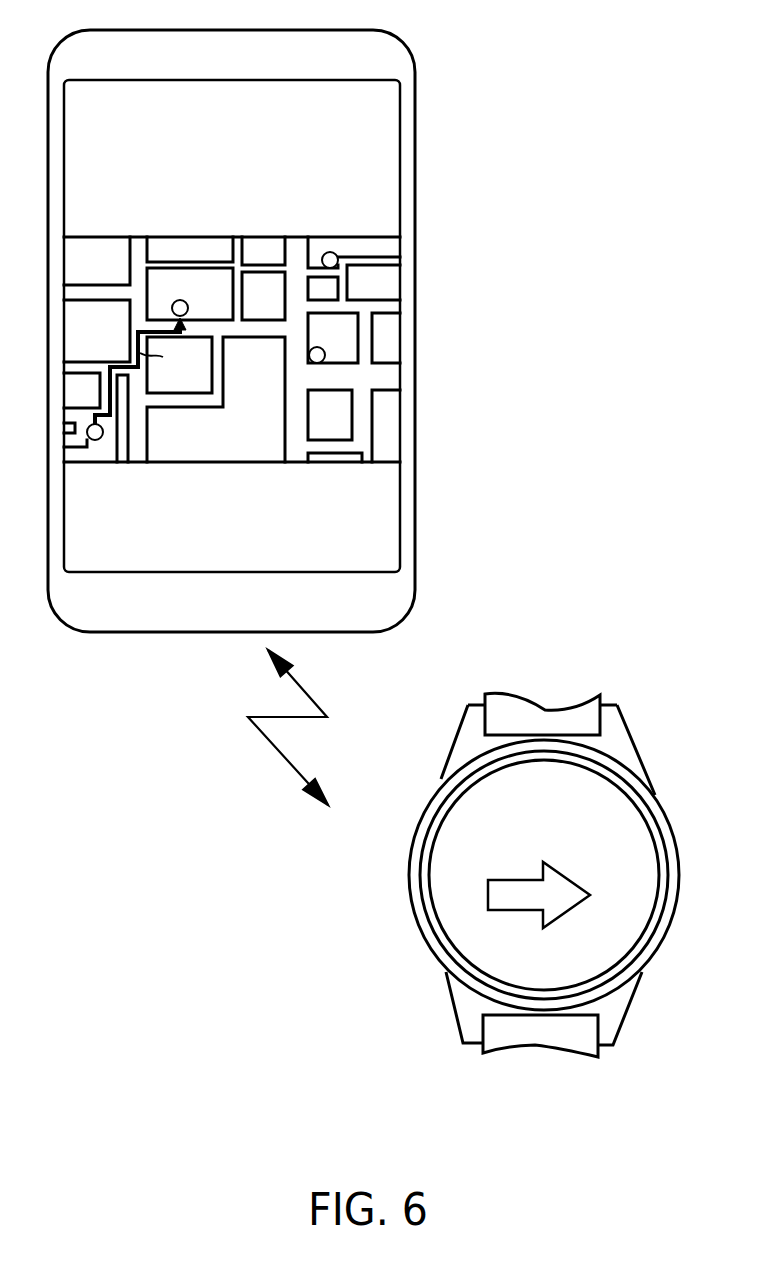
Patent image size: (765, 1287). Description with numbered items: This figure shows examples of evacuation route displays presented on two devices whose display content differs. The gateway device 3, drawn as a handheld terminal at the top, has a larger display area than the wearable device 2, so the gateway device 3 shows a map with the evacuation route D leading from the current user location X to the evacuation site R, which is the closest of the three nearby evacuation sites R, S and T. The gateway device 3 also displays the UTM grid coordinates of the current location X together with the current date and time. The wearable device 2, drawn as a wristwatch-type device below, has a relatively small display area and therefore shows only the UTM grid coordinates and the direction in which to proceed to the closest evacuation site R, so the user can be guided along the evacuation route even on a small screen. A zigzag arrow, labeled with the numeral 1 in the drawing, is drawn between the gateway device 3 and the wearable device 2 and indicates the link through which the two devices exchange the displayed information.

The portable terminal (smartphone) 1 is at (347, 30).
The wearable device 2 is at (657, 797).
The gateway device 3 is at (164, 727).